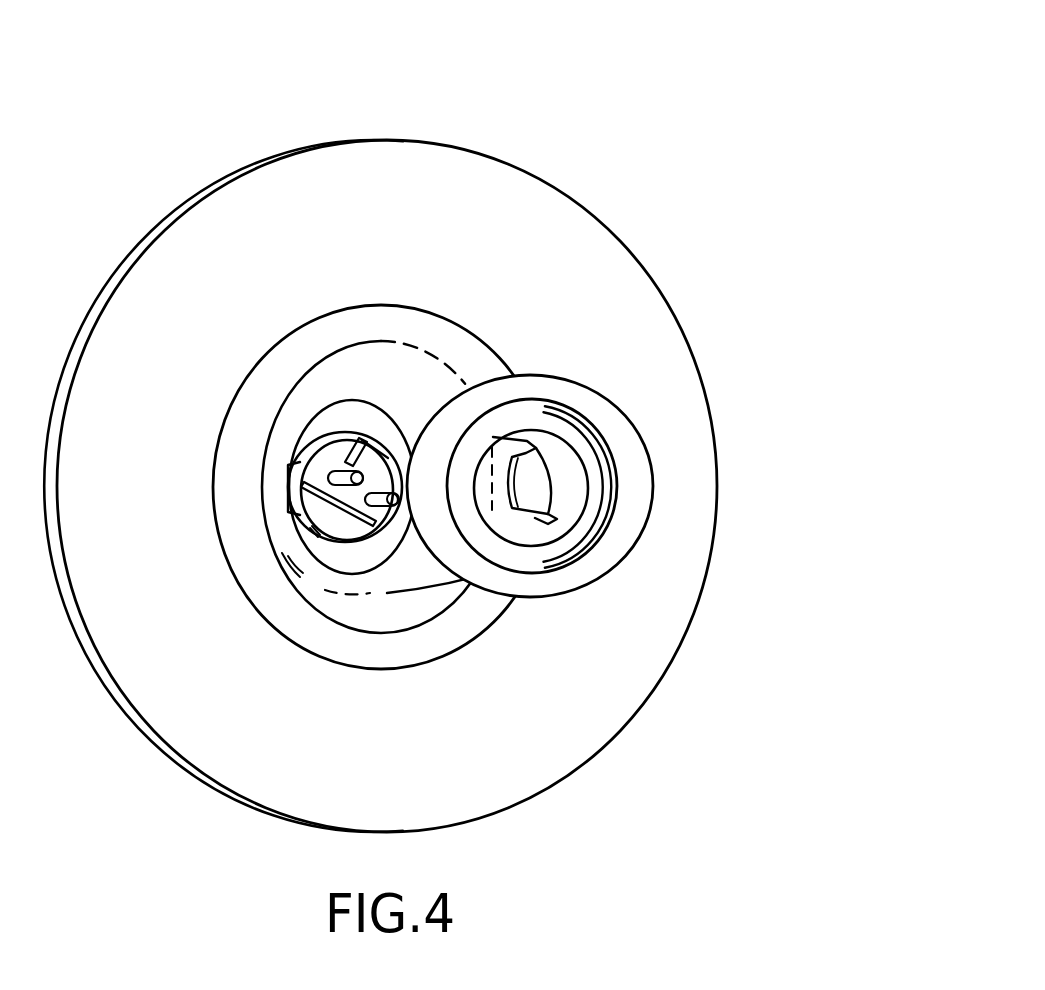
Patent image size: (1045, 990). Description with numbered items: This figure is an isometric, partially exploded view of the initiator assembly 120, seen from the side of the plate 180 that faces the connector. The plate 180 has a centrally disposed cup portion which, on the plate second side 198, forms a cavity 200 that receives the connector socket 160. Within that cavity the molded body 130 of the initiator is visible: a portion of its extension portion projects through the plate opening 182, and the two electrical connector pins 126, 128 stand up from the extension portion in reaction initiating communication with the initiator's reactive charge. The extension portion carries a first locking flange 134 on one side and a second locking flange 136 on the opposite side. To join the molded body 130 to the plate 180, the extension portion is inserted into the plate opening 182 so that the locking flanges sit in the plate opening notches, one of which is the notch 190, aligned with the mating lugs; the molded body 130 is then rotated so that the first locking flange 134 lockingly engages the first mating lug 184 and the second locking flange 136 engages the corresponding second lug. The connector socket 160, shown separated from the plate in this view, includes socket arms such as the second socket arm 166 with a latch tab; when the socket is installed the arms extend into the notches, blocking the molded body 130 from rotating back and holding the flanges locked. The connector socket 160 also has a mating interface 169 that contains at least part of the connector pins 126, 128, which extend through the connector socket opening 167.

The initiator assembly 120 is at (550, 110).
The plate 180 is at (413, 140).
The plate second side 198 is at (525, 208).
The cavity 200 is at (314, 380).
The electrical connector pin 126 is at (443, 487).
The second locking flange 136 is at (343, 471).
The electrical connector pin 128 is at (346, 452).
The molded body 130 is at (298, 460).
The plate opening 182 is at (292, 478).
The plate opening notch 190 is at (293, 503).
The first mating lug 184 is at (300, 540).
The first locking flange 134 is at (333, 542).
The connector socket 160 is at (653, 463).
The second socket arm 166 is at (540, 482).
The mating interface 169 is at (628, 488).
The connector socket opening 167 is at (558, 525).